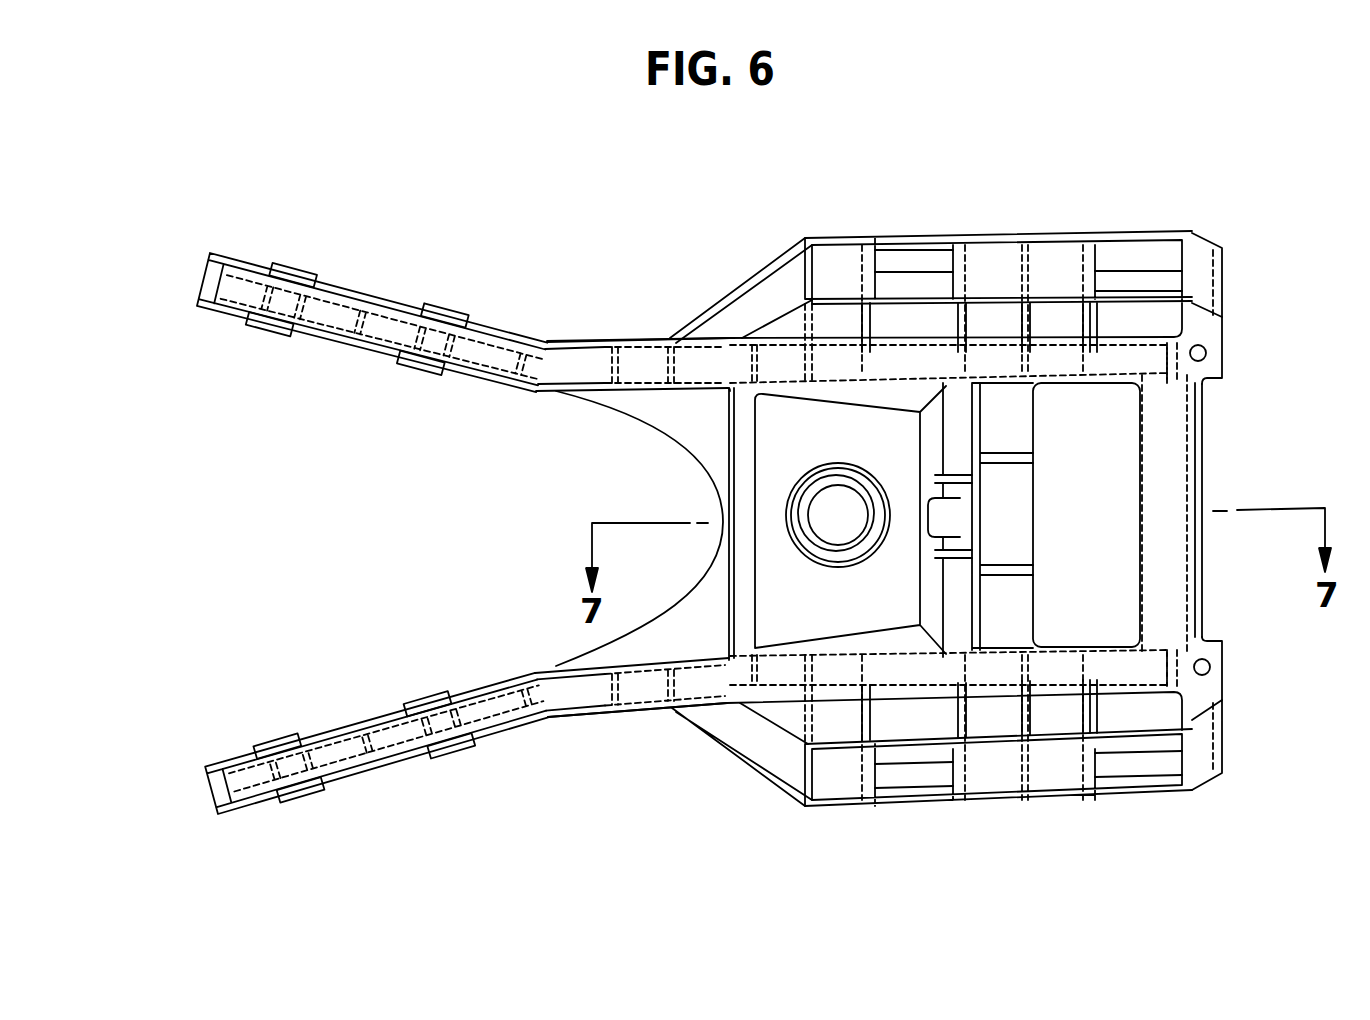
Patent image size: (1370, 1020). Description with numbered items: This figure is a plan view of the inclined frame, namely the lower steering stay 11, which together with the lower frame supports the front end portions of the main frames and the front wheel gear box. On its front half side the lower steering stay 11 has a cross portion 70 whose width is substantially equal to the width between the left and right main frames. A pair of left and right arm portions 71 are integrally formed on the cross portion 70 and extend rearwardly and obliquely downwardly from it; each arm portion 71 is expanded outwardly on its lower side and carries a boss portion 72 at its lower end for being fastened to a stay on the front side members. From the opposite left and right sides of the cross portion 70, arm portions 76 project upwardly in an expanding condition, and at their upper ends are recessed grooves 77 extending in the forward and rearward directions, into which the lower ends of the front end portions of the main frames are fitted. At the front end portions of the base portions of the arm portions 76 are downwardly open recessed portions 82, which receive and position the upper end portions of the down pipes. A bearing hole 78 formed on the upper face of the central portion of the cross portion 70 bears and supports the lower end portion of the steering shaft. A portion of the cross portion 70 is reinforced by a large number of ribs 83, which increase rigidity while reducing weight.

The lower steering stay 11 is at (748, 266).
The cross portion 70 is at (1177, 460).
The arm portions 71 is at (482, 337).
The boss portion 72 is at (428, 365).
The arm portions 76 is at (1000, 236).
The recessed grooves 77 is at (1062, 255).
The bearing hole 78 is at (830, 502).
The recessed portions 82 is at (1222, 358).
The ribs 83 is at (947, 316).